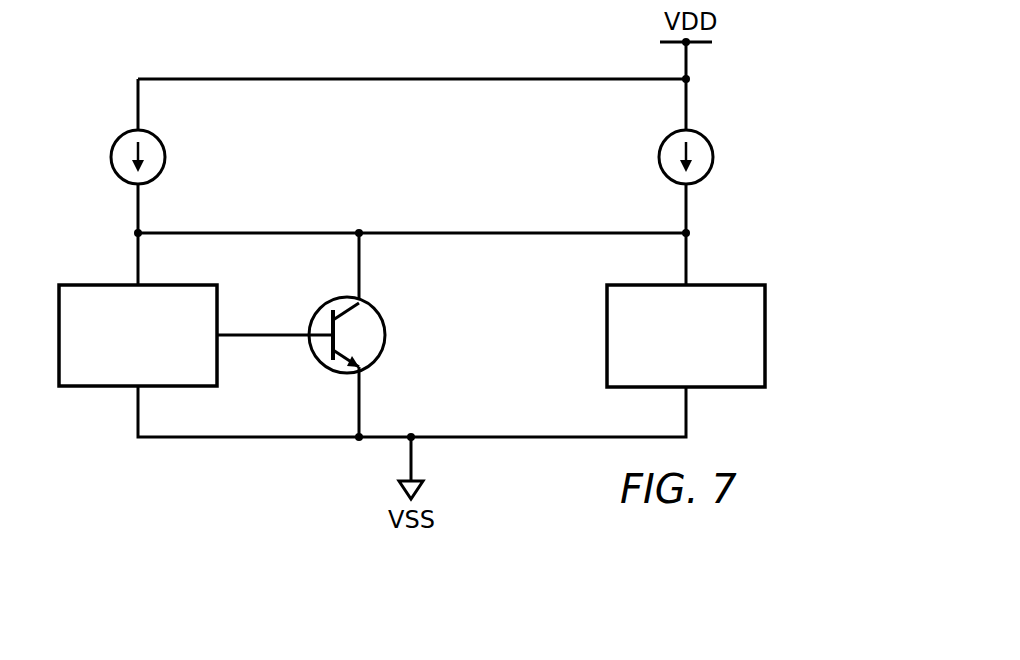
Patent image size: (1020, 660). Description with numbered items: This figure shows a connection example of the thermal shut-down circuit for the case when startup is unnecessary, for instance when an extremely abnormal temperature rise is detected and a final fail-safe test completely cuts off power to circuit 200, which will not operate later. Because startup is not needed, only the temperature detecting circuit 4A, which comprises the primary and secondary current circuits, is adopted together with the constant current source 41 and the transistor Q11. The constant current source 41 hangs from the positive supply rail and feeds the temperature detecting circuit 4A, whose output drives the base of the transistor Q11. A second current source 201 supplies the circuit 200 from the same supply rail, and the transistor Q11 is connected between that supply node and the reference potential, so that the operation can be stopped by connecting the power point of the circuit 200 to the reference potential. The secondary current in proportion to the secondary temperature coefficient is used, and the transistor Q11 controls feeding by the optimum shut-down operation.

The constant current source 41 is at (111, 154).
The current source 201 is at (713, 160).
The temperature detecting circuit 4A is at (100, 283).
The transistor Q11 is at (345, 352).
The circuit 200 is at (766, 338).